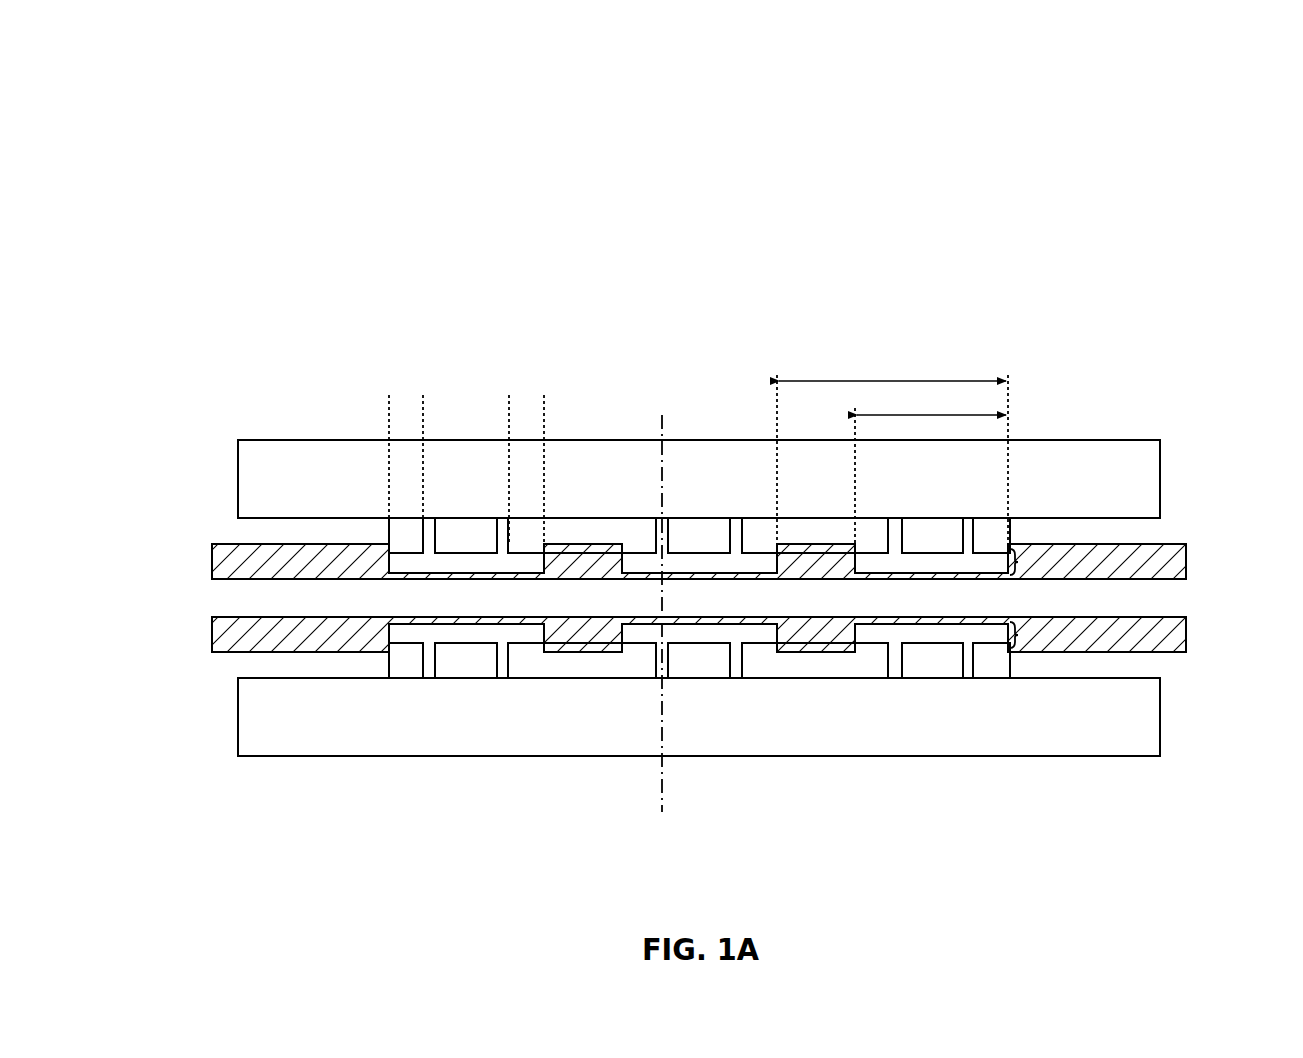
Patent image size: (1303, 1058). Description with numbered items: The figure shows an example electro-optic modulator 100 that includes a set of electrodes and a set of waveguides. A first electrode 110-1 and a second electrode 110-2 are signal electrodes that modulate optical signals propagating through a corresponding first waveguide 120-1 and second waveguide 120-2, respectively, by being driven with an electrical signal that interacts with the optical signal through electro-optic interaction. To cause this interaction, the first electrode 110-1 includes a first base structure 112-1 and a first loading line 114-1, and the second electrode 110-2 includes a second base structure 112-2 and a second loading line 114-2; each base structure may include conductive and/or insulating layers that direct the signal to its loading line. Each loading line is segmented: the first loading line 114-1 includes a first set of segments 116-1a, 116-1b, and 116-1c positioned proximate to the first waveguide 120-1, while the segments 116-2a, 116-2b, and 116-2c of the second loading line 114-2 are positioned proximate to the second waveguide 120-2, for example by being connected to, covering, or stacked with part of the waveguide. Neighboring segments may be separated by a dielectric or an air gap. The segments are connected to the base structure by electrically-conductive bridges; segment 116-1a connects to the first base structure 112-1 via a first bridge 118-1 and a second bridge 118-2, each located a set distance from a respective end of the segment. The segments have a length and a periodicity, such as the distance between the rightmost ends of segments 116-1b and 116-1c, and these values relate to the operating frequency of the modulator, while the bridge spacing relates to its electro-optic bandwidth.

The electro-optic modulator 100 is at (210, 64).
The first electrode 110-1 is at (238, 463).
The second electrode 110-2 is at (238, 712).
The first base structure 112-1 is at (698, 479).
The second base structure 112-2 is at (698, 718).
The first loading line 114-1 is at (1017, 561).
The second loading line 114-2 is at (1017, 635).
The segment 116-1a is at (466, 558).
The segment 116-1b is at (699, 558).
The segment 116-1c is at (931, 558).
The segment 116-2a is at (466, 638).
The segment 116-2b is at (699, 638).
The segment 116-2c is at (931, 638).
The first bridge 118-1 is at (431, 531).
The second bridge 118-2 is at (501, 531).
The first waveguide 120-1 is at (212, 548).
The second waveguide 120-2 is at (212, 616).